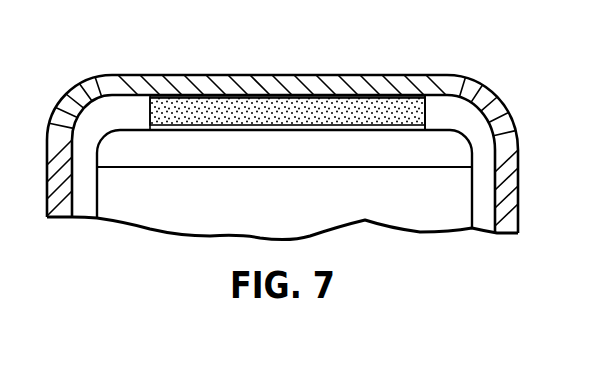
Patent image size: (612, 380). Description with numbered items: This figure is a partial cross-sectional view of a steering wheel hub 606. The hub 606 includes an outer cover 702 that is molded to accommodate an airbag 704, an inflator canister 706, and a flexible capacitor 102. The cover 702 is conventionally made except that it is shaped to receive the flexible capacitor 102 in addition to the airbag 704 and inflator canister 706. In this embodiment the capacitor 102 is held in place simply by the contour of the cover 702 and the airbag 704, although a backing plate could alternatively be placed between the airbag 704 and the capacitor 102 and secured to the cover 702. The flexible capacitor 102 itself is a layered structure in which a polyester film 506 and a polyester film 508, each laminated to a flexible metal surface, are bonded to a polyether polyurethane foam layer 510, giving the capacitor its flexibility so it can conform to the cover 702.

The outer cover 702 is at (173, 82).
The foam layer 510 is at (256, 110).
The polyester film 506 is at (348, 100).
The hub 606 is at (448, 90).
The flexible capacitor 102 is at (426, 111).
The airbag 704 is at (313, 162).
The inflator canister 706 is at (313, 202).
The polyester film 508 is at (282, 185).